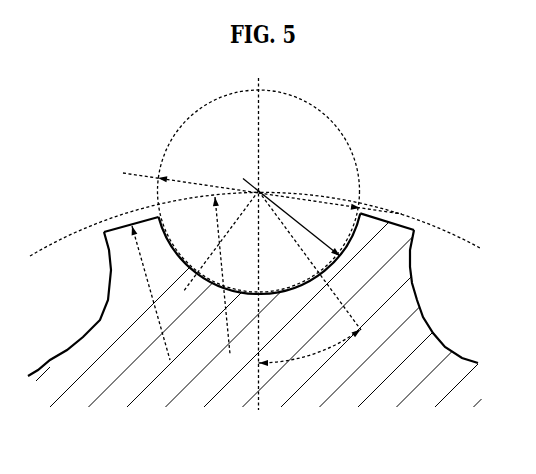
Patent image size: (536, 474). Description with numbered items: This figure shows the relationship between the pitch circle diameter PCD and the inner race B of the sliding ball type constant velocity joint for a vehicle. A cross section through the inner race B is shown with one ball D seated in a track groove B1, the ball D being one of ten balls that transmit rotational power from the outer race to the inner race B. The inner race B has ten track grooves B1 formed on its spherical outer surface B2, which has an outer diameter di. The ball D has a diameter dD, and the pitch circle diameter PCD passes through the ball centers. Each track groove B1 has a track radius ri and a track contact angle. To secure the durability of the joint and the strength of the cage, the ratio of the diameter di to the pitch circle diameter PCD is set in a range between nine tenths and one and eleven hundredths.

The ball D is at (321, 113).
The ball diameter dD is at (262, 185).
The track radius ri is at (292, 219).
The pitch circle diameter PCD is at (255, 273).
The outer diameter of the spherical outer surface di is at (149, 292).
The inner race B is at (95, 350).
The track groove B1 is at (430, 317).
The spherical outer surface B2 is at (397, 215).